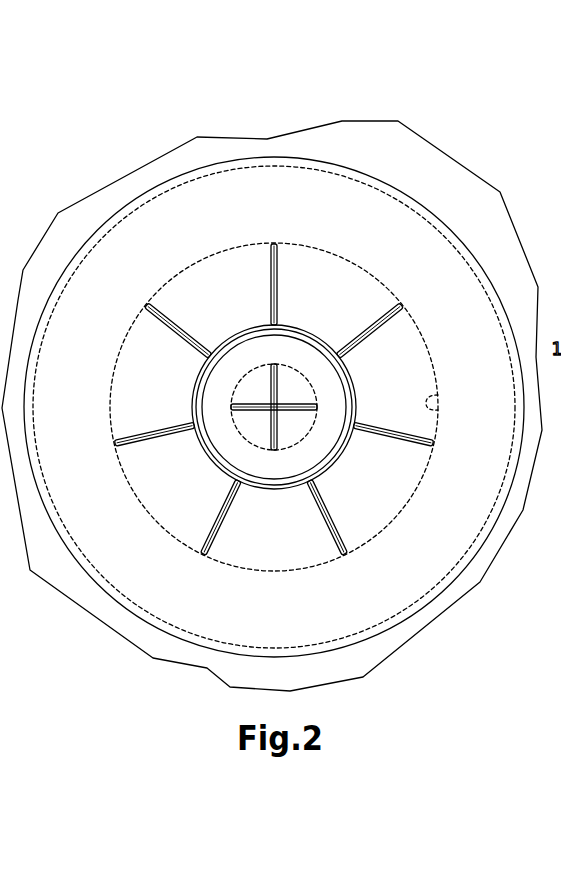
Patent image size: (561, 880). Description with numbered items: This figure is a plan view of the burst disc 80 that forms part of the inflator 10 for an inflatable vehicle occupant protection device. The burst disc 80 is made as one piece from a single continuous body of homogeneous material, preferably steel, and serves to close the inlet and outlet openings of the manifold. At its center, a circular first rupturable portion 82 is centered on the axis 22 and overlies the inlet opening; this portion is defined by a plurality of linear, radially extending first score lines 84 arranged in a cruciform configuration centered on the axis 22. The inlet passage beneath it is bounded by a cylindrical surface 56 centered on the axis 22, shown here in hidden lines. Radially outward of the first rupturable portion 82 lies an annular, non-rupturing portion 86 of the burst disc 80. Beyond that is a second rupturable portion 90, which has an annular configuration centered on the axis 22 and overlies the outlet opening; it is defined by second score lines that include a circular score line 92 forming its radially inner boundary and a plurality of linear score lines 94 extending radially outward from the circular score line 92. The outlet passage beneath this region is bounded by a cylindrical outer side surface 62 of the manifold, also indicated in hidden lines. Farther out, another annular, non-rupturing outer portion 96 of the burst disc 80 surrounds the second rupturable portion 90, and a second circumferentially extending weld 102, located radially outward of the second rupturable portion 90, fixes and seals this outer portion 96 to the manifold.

The inflator 10 is at (202, 129).
The burst disc 80 is at (134, 156).
The second circumferentially extending weld 102 is at (460, 566).
The non-rupturing outer portion 96 is at (335, 233).
The circular score line 92 is at (213, 457).
The non-rupturing portion 86 is at (258, 347).
The linear score lines 94 is at (140, 432).
The second rupturable portion 90 is at (201, 554).
The first score lines 84 is at (273, 395).
The first rupturable portion 82 is at (291, 372).
The cylindrical surface 56 is at (240, 375).
The cylindrical outer side surface 62 is at (438, 395).
The axis 22 is at (274, 408).